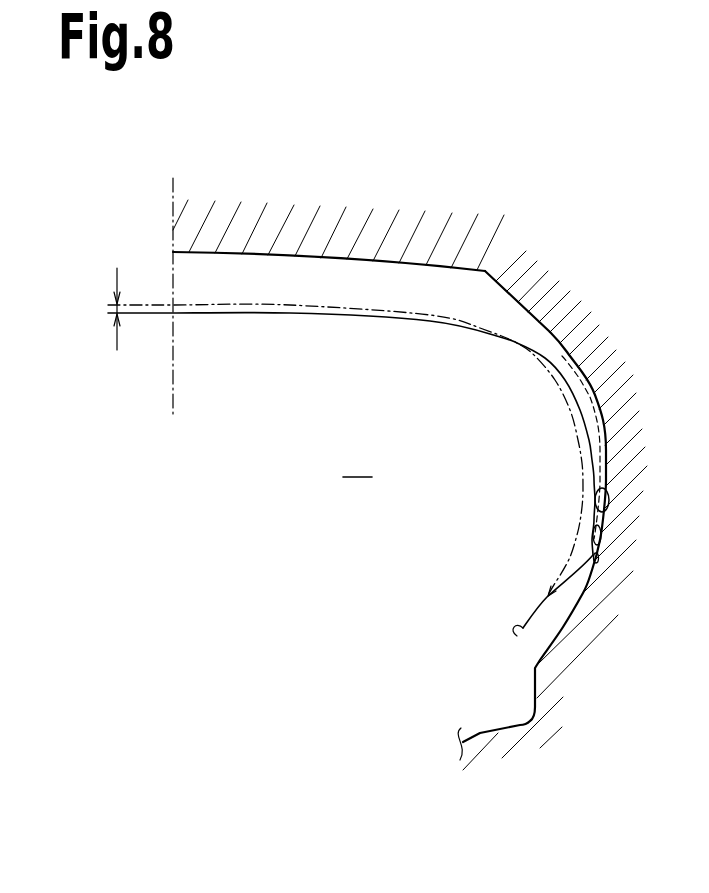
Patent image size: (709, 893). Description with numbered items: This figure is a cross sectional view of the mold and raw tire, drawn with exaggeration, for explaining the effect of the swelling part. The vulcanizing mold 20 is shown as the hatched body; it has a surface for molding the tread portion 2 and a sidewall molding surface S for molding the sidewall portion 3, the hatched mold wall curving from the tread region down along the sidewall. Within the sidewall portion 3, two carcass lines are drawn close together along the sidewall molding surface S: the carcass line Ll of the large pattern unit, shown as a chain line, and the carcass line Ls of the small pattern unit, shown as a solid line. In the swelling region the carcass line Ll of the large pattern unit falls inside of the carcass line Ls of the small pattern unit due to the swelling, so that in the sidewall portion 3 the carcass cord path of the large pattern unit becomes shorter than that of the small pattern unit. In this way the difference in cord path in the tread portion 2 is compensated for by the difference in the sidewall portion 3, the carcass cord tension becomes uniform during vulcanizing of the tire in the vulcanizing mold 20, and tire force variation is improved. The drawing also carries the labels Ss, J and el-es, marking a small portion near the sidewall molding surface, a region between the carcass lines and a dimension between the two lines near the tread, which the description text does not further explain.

The tread portion 2 is at (352, 200).
The sidewall portion 3 is at (635, 362).
The vulcanizing mold 20 is at (295, 253).
The carcass line of the small pattern unit Ls is at (591, 480).
The carcass line of the large pattern unit Ll is at (566, 402).
The sidewall molding surface S is at (596, 557).
The sheet surface portion Ss is at (606, 510).
The region J is at (357, 463).
The thickness difference el-es is at (114, 306).